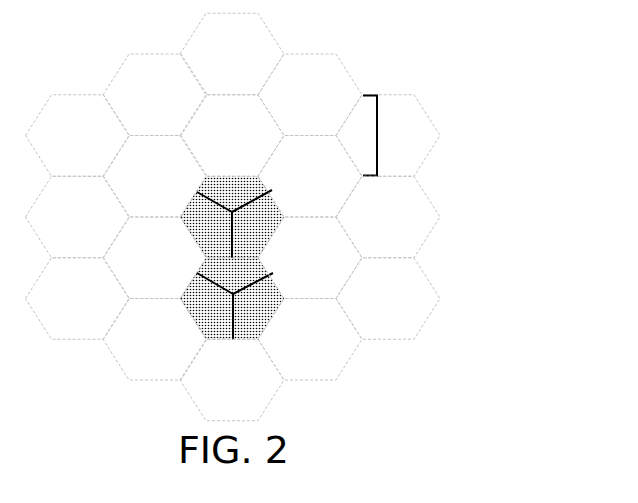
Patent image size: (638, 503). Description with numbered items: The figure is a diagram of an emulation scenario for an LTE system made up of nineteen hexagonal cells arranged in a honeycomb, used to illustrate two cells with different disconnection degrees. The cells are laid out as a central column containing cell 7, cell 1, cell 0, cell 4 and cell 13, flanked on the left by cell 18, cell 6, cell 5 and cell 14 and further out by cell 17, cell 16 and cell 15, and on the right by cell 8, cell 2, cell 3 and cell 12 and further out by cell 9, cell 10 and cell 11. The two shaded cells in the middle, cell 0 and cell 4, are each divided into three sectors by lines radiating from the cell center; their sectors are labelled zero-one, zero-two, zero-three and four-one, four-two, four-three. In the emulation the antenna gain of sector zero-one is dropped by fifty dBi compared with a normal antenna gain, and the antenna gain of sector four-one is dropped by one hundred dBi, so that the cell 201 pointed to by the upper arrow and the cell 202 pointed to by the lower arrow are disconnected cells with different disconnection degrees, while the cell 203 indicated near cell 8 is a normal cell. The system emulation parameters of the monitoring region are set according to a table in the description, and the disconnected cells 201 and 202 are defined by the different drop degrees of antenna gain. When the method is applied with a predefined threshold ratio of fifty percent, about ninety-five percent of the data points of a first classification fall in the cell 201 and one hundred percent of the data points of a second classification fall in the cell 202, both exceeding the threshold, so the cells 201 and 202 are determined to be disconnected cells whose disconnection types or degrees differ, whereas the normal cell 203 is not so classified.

The disconnected cell 201 is at (222, 192).
The disconnected cell 202 is at (247, 277).
The normal cell 203 is at (322, 78).
The cell 0 is at (232, 217).
The cell 4 is at (232, 299).
The cell 1 is at (232, 136).
The cell 2 is at (310, 177).
The cell 3 is at (310, 258).
The cell 5 is at (155, 258).
The cell 6 is at (155, 177).
The cell 7 is at (232, 54).
The cell 8 is at (310, 95).
The cell 9 is at (388, 136).
The cell 10 is at (388, 217).
The cell 11 is at (388, 299).
The cell 12 is at (310, 340).
The cell 13 is at (232, 380).
The cell 14 is at (155, 340).
The cell 15 is at (78, 299).
The cell 16 is at (78, 217).
The cell 17 is at (78, 136).
The cell 18 is at (155, 95).